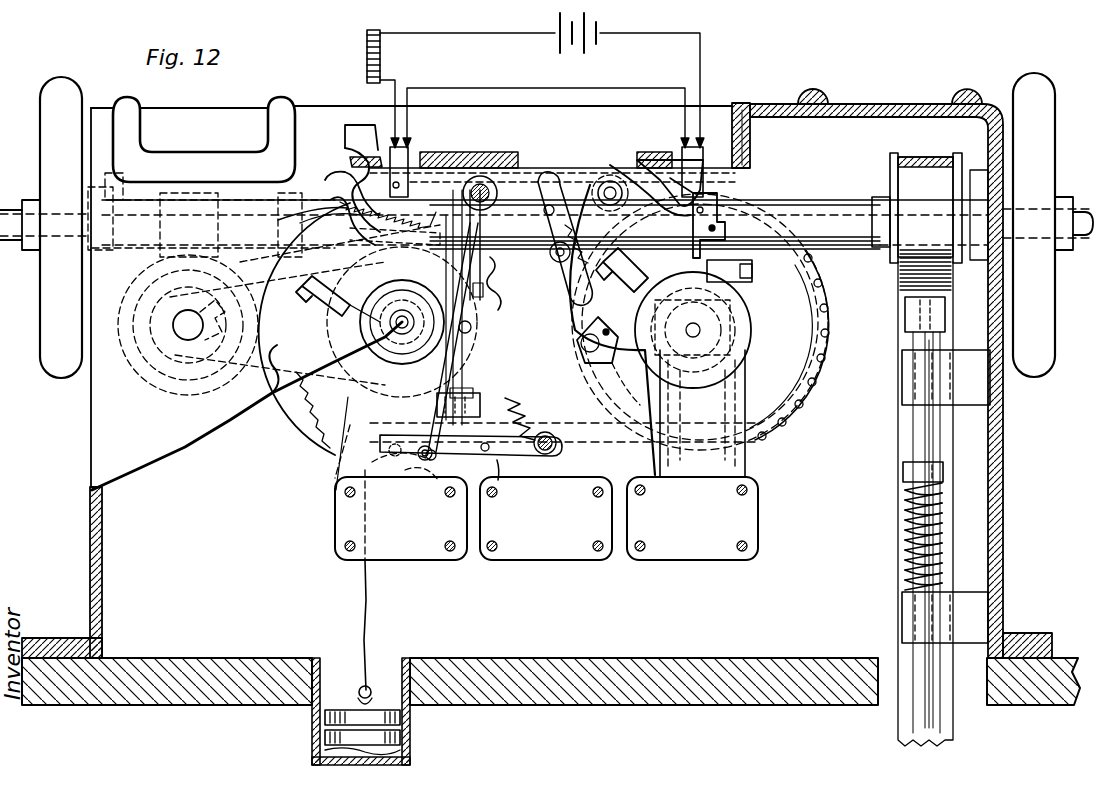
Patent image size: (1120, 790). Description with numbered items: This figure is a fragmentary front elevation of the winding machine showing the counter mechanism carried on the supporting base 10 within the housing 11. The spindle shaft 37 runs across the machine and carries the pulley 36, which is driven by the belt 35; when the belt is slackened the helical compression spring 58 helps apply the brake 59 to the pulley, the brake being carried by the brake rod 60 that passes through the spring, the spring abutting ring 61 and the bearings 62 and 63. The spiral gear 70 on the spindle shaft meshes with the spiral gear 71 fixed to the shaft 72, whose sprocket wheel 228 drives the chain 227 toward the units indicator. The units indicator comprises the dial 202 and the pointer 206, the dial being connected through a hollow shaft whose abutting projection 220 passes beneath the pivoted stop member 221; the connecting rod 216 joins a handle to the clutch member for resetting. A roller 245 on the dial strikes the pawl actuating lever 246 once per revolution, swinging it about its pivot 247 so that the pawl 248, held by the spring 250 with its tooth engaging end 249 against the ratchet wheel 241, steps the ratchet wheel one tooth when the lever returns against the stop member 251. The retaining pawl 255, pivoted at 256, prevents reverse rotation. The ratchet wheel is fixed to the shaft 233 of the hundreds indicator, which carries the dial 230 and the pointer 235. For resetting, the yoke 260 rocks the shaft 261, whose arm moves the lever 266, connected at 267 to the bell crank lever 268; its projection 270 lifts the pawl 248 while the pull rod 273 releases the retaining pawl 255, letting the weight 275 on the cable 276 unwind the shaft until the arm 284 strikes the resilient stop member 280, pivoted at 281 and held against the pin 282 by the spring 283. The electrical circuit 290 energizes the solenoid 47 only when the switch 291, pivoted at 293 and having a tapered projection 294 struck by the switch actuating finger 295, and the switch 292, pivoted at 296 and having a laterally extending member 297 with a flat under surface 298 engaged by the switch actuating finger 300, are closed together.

The supporting base 10 is at (518, 662).
The housing 11 is at (995, 512).
The belt 35 is at (922, 158).
The pulley 36 is at (905, 258).
The spindle shaft 37 is at (835, 200).
The solenoid 47 is at (366, 62).
The helical compression spring 58 is at (905, 502).
The brake 59 is at (905, 305).
The brake rod 60 is at (930, 440).
The spring abutting ring 61 is at (905, 470).
The bearing 62 is at (923, 368).
The bearing 63 is at (910, 610).
The spiral gear 70 is at (183, 192).
The spiral gear 71 is at (155, 390).
The shaft 72 is at (183, 312).
The dial 202 is at (610, 365).
The pointer 206 is at (668, 230).
The connecting rod 216 is at (710, 322).
The abutting projection 220 is at (640, 290).
The pivoted stop member 221 is at (735, 285).
The chain 227 is at (250, 390).
The sprocket wheel 228 is at (335, 298).
The dial 230 is at (247, 406).
The shaft 233 is at (335, 298).
The pointer 235 is at (370, 330).
The ratchet wheel 241 is at (380, 432).
The roller 245 is at (628, 385).
The pawl actuating lever 246 is at (570, 338).
The pivot 247 is at (560, 172).
The pawl 248 is at (515, 152).
The tooth engaging end 249 is at (356, 135).
The spring 250 is at (480, 275).
The stop member 251 is at (608, 188).
The retaining pawl 255 is at (422, 490).
The pivotal support 256 is at (440, 500).
The yoke 260 is at (795, 398).
The shaft 261 is at (782, 424).
The lever 266 is at (466, 405).
The connection 267 is at (508, 310).
The bell crank lever 268 is at (480, 312).
The projection 270 is at (398, 226).
The pull rod 273 is at (546, 510).
The weight 275 is at (385, 680).
The cable 276 is at (372, 595).
The resilient stop member 280 is at (500, 450).
The pivot 281 is at (555, 450).
The pin 282 is at (482, 410).
The spring 283 is at (540, 425).
The arm 284 is at (350, 258).
The electrical circuit 290 is at (448, 40).
The switch 291 is at (750, 150).
The switch 292 is at (410, 155).
The pivotal support 293 is at (622, 180).
The tapered projection 294 is at (705, 178).
The switch actuating finger 295 is at (690, 220).
The pivotal support 296 is at (485, 185).
The laterally extending member 297 is at (345, 170).
The flat under surface 298 is at (352, 165).
The switch actuating finger 300 is at (296, 222).